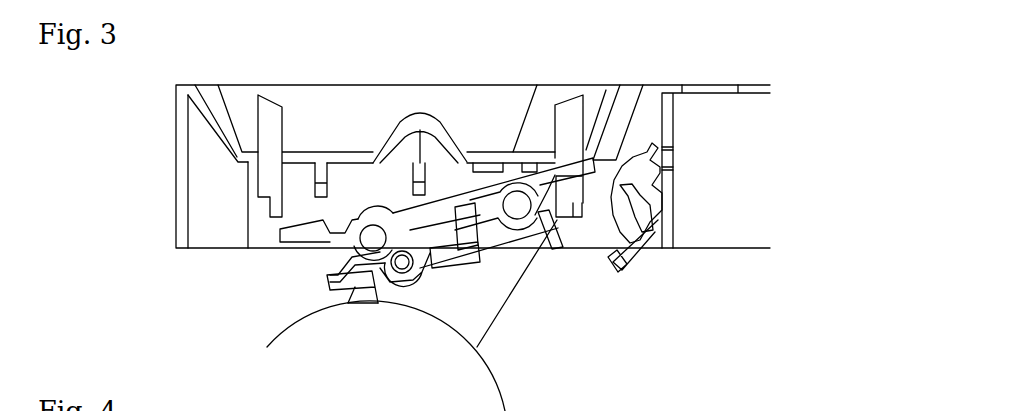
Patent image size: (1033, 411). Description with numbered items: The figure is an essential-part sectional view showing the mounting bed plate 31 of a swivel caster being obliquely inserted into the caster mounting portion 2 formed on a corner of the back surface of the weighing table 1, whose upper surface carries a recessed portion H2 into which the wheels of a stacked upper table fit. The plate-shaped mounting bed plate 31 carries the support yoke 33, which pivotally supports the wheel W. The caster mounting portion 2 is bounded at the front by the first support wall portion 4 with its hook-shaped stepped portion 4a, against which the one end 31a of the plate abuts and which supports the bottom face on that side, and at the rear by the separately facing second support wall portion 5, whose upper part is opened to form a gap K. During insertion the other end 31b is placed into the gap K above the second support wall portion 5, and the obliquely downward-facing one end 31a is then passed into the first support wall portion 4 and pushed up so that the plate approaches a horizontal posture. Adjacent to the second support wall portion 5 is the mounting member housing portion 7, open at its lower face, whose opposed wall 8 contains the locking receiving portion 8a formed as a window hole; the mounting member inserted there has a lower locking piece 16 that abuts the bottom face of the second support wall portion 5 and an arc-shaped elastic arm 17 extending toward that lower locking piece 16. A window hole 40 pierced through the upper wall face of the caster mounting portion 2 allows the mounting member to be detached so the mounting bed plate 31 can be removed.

The weighing table 1 is at (215, 64).
The caster mounting portion 2 is at (333, 174).
The recessed portion H2 is at (440, 92).
The first support wall portion 4 is at (248, 222).
The hook-shaped stepped portion 4a is at (250, 167).
The mounting bed plate 31 is at (375, 207).
The one end of the mounting bed plate 31a is at (293, 248).
The other end of the mounting bed plate 31b is at (565, 150).
The second support wall portion 5 is at (573, 208).
The gap K is at (544, 142).
The mounting member housing portion 7 is at (649, 106).
The window hole 40 is at (593, 128).
The opposed wall 8 is at (675, 224).
The locking receiving portion 8a is at (675, 158).
The lower locking piece 16 is at (620, 262).
The elastic arm 17 is at (640, 246).
The support yoke 33 is at (481, 330).
The wheel W is at (386, 356).